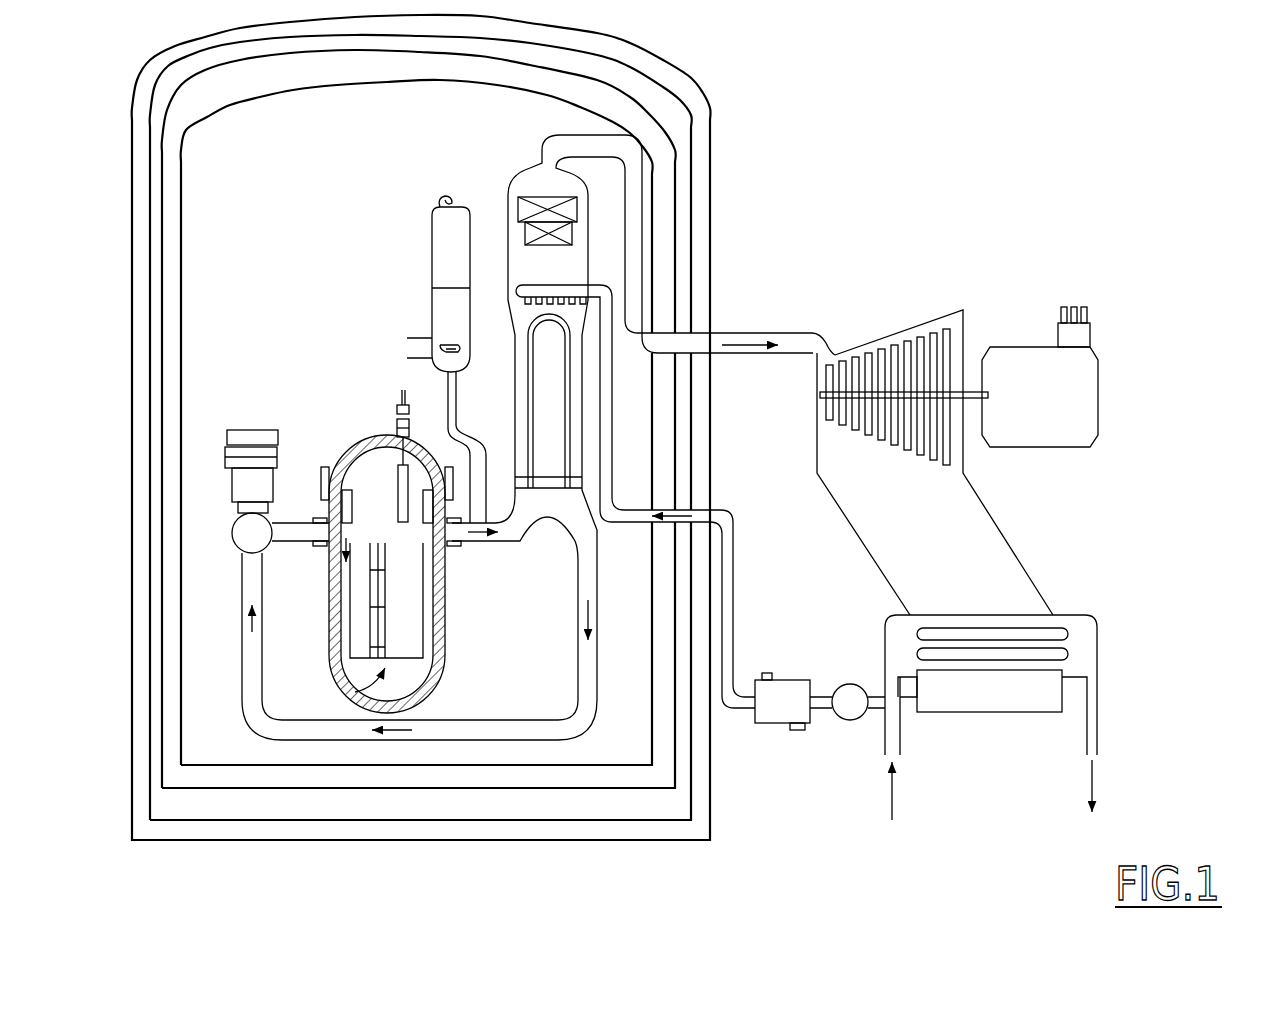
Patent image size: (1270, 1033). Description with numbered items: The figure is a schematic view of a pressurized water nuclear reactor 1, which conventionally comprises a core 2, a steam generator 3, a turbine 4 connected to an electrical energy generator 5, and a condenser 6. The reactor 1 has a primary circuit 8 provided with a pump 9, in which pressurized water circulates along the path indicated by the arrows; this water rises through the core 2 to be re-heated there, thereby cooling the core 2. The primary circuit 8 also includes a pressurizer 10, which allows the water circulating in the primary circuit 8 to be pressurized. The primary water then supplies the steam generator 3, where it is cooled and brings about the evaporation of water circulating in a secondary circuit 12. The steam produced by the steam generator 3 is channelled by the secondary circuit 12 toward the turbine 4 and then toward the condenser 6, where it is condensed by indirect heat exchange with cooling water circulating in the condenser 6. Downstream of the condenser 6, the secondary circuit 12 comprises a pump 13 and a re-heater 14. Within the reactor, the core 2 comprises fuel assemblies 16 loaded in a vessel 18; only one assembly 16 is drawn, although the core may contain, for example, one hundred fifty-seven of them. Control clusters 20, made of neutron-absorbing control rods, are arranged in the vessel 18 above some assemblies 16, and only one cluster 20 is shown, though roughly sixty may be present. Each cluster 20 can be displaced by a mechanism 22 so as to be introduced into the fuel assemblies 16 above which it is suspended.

The pressurized water nuclear reactor 1 is at (736, 114).
The core 2 is at (440, 577).
The steam generator 3 is at (520, 158).
The turbine 4 is at (922, 307).
The electrical energy generator 5 is at (1128, 400).
The condenser 6 is at (1035, 546).
The primary circuit 8 is at (236, 660).
The pump 9 is at (222, 432).
The pressurizer 10 is at (430, 257).
The secondary circuit 12 is at (773, 327).
The pump 13 is at (847, 730).
The re-heater 14 is at (788, 675).
The fuel assembly 16 is at (366, 610).
The vessel 18 is at (453, 665).
The control cluster 20 is at (410, 478).
The mechanism 22 is at (391, 421).